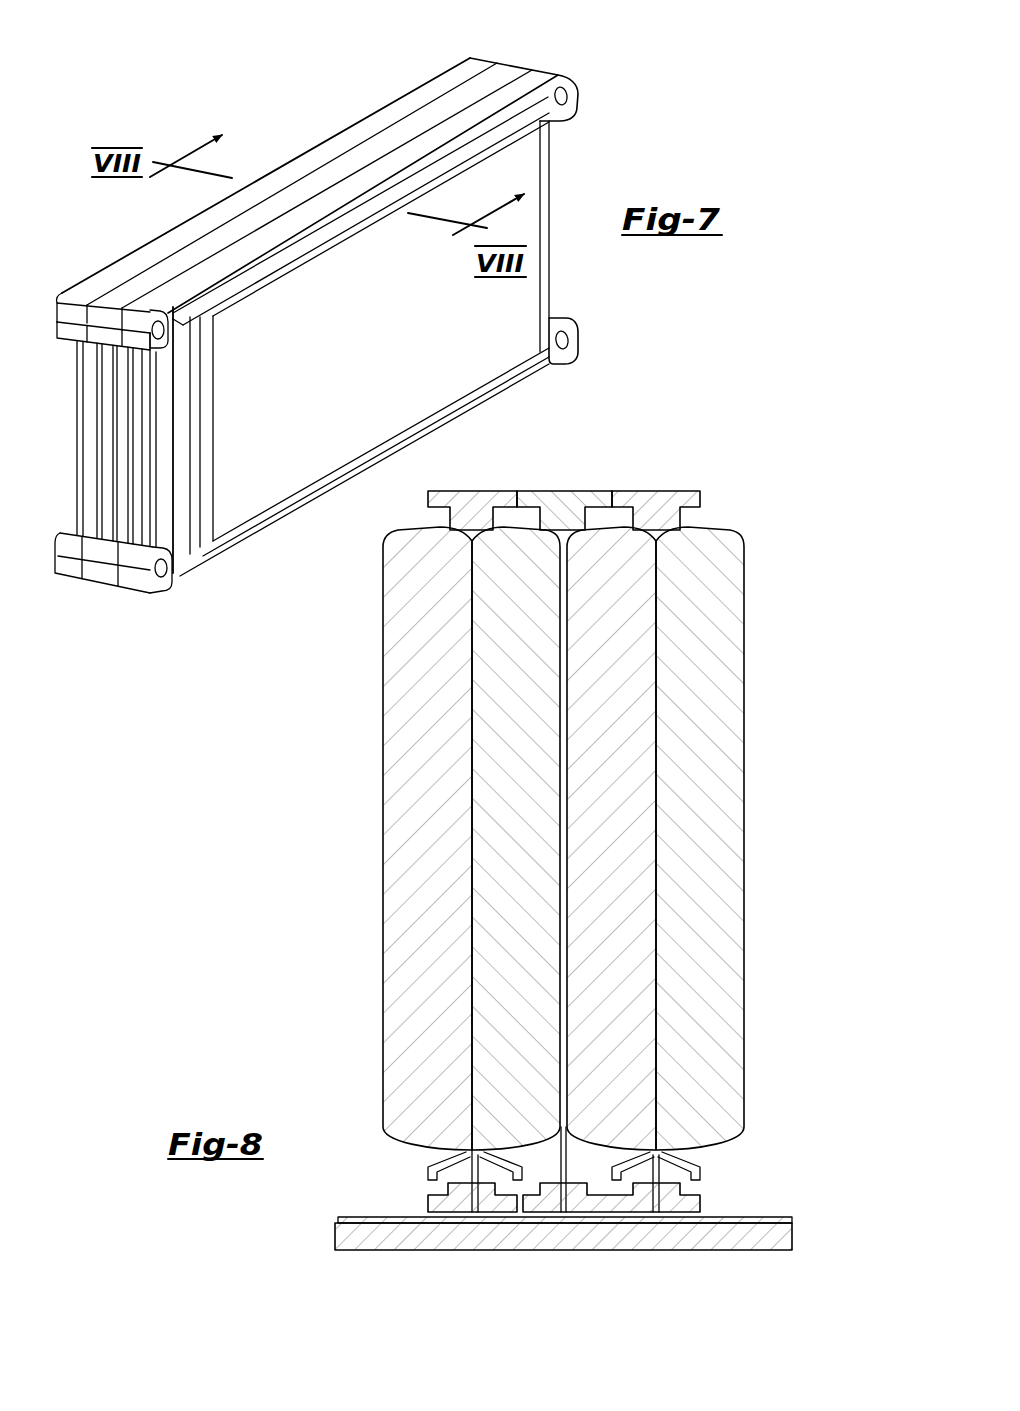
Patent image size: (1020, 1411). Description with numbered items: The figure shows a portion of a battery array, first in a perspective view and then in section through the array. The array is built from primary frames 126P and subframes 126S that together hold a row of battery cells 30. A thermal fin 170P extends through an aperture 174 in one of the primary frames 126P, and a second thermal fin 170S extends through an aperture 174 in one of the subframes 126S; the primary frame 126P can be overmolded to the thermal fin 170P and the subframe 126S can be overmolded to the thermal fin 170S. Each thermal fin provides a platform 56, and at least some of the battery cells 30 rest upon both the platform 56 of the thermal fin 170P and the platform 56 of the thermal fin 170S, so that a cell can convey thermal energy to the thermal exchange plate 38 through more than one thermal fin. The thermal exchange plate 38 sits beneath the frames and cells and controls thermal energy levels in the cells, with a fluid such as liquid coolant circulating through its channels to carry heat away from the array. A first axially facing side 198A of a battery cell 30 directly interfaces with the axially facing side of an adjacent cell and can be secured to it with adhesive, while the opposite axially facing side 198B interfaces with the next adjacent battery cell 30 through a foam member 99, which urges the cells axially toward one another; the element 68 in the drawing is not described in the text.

In FIG. 7, the battery cell 30 is at (453, 362).
In FIG. 8, the battery cell 30 is at (713, 600).
In FIG. 8, the thermal exchange plate 38 is at (774, 1235).
In FIG. 8, the platform 56 is at (428, 1177).
In FIG. 8, the thermal interface pad 68 is at (352, 1218).
In FIG. 8, the foam member 99 is at (565, 562).
In FIG. 7, the primary frame 126P is at (487, 60).
In FIG. 8, the primary frame 126P is at (463, 491).
In FIG. 7, the subframe 126S is at (522, 65).
In FIG. 8, the subframe 126S is at (600, 491).
In FIG. 8, the thermal fin 170P is at (477, 1167).
In FIG. 8, the thermal fin 170S is at (567, 1167).
In FIG. 8, the aperture 174 is at (480, 1200).
In FIG. 8, the first axially facing side 198A is at (472, 863).
In FIG. 8, the opposite axially facing side 198B is at (567, 825).